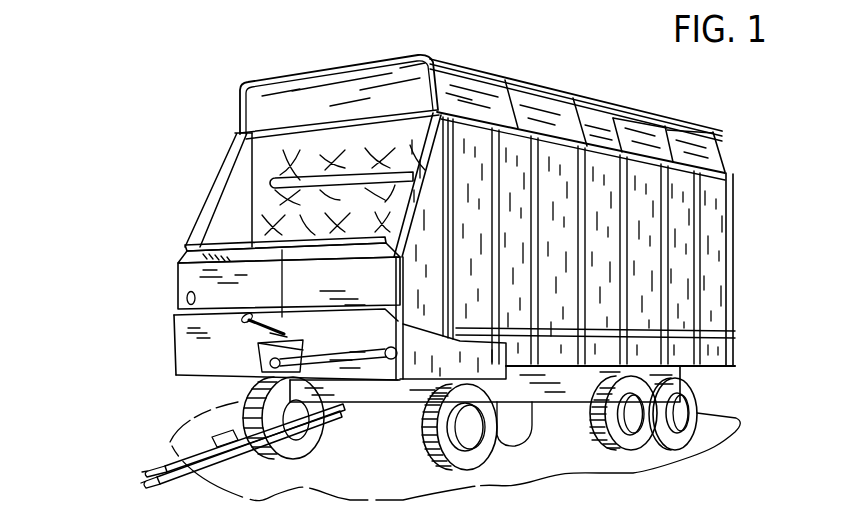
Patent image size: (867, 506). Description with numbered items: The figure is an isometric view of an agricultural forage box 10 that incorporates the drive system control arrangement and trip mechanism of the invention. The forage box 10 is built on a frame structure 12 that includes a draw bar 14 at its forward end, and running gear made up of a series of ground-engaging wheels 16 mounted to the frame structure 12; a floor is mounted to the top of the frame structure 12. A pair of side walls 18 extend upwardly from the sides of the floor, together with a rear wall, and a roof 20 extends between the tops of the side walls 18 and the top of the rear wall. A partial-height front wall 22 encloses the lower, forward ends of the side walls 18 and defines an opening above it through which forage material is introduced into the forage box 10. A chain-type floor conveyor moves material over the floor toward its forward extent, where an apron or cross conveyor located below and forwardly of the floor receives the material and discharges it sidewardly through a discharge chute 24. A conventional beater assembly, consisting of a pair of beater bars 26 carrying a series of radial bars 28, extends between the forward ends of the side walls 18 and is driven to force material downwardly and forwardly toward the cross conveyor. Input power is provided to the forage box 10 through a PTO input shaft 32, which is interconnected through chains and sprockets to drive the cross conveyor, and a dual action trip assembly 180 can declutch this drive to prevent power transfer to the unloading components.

The agricultural forage box 10 is at (113, 150).
The frame structure 12 is at (397, 418).
The draw bar 14 is at (223, 464).
The ground-engaging wheels 16 is at (702, 395).
The side walls 18 is at (712, 233).
The roof 20 is at (553, 80).
The partial-height front wall 22 is at (176, 288).
The discharge chute 24 is at (482, 334).
The beater bars 26 is at (333, 163).
The radial bars 28 is at (312, 170).
The PTO input shaft 32 is at (328, 350).
The dual action trip assembly 180 is at (191, 240).